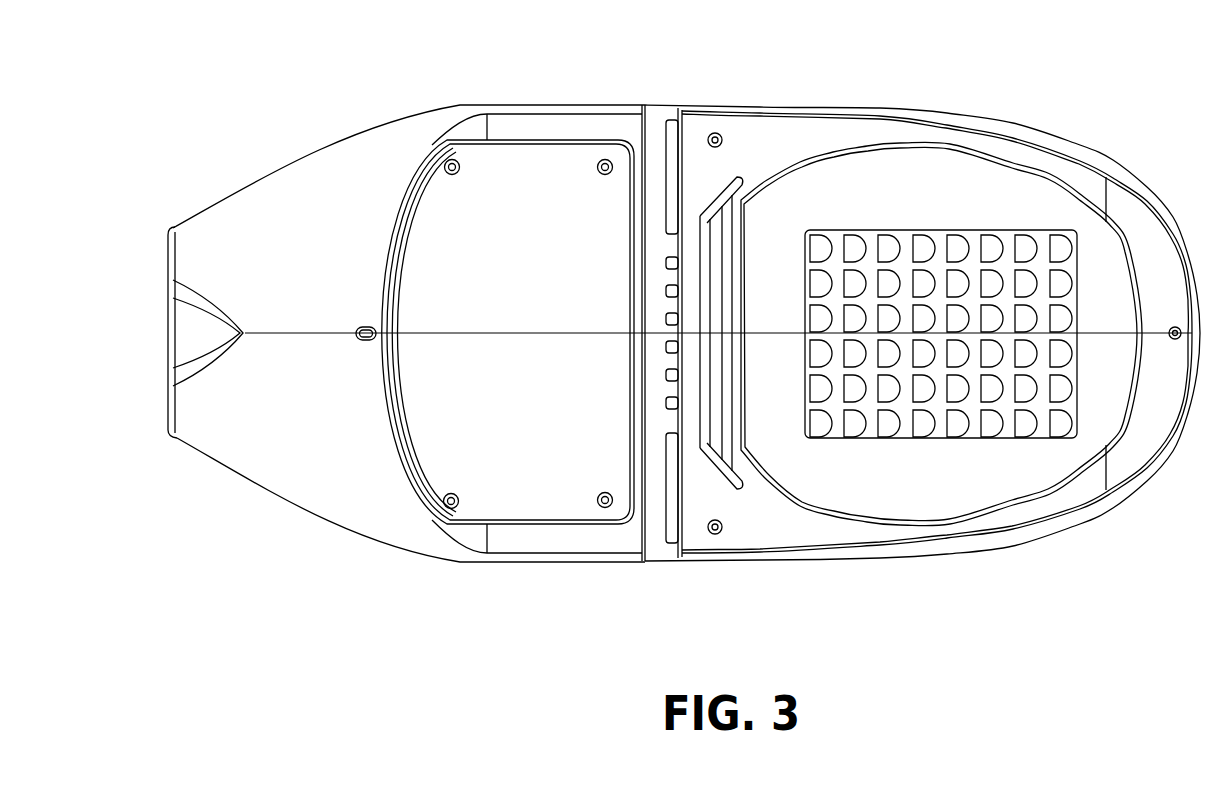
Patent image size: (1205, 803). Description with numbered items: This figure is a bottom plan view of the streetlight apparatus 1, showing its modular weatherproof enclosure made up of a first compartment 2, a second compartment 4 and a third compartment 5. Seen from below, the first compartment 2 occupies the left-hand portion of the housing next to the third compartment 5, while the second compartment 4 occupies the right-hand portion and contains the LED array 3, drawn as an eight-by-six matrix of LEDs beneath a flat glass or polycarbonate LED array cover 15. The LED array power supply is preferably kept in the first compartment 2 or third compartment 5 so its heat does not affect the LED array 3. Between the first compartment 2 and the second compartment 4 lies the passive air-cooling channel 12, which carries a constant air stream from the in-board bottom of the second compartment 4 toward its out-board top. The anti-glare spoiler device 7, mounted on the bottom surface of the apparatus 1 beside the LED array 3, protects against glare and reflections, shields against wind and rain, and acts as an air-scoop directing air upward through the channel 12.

The streetlight apparatus 1 is at (950, 78).
The first compartment 2 is at (543, 132).
The LED array 3 is at (999, 386).
The second compartment 4 is at (1113, 150).
The third compartment 5 is at (377, 152).
The anti-glare spoiler device 7 is at (748, 494).
The passive air-cooling channel 12 is at (671, 245).
The LED array cover 15 is at (913, 490).